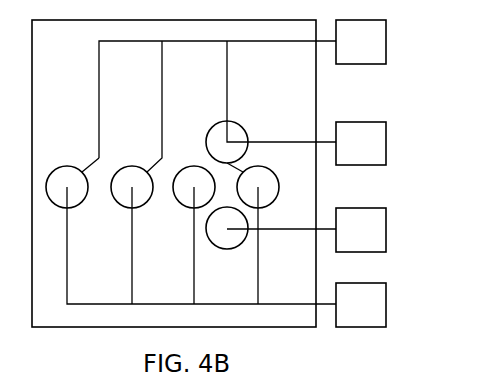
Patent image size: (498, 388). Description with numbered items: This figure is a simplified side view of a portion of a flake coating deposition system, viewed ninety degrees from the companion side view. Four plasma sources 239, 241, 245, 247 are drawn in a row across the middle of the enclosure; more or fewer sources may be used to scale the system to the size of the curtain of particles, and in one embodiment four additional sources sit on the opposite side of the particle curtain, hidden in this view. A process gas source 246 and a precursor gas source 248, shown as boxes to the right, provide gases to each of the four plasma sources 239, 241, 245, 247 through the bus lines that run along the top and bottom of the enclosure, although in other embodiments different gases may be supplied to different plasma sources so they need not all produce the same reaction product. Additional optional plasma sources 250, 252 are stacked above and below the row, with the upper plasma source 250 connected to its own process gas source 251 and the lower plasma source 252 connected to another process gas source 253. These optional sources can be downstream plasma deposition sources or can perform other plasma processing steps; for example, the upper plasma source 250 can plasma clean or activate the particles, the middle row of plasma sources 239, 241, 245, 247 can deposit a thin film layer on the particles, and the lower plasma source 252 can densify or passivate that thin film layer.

The plasma source 239 is at (68, 166).
The plasma source 241 is at (132, 166).
The plasma source 245 is at (195, 166).
The plasma source 247 is at (279, 186).
The upper plasma source 250 is at (242, 127).
The lower plasma source 252 is at (227, 250).
The precursor gas source 248 is at (386, 42).
The process gas source 251 is at (386, 142).
The process gas source 253 is at (386, 230).
The process gas source 246 is at (386, 305).